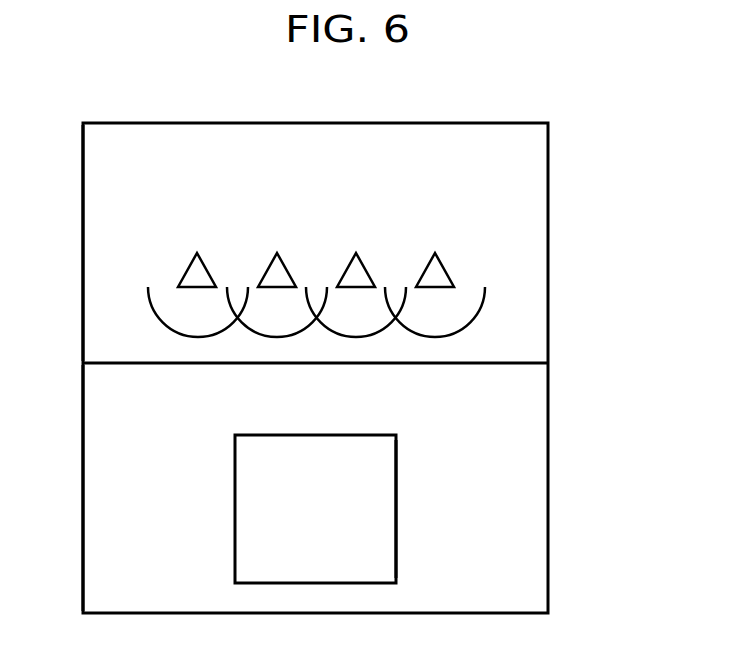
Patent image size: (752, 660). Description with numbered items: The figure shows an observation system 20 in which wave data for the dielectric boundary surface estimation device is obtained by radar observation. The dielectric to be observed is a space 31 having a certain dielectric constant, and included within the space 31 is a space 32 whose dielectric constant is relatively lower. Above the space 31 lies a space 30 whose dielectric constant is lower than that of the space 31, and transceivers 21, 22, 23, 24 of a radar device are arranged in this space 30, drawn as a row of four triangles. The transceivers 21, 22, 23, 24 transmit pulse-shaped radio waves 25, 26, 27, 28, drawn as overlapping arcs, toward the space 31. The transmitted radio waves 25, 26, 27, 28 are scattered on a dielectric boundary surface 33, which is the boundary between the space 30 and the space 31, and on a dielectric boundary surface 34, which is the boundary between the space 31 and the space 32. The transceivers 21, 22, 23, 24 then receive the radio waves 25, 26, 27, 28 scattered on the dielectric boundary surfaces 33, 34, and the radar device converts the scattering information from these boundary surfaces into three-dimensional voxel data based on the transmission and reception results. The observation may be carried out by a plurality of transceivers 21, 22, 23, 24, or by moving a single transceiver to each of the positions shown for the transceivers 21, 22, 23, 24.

The observation system 20 is at (130, 123).
The transceiver 21 is at (190, 266).
The transceiver 22 is at (270, 266).
The transceiver 23 is at (349, 266).
The transceiver 24 is at (428, 266).
The radio wave 25 is at (160, 318).
The radio wave 26 is at (263, 335).
The radio wave 27 is at (343, 335).
The radio wave 28 is at (422, 335).
The space 30 is at (98, 270).
The space 31 is at (98, 466).
The space 32 is at (253, 535).
The dielectric boundary surface 33 is at (495, 363).
The dielectric boundary surface 34 is at (398, 517).